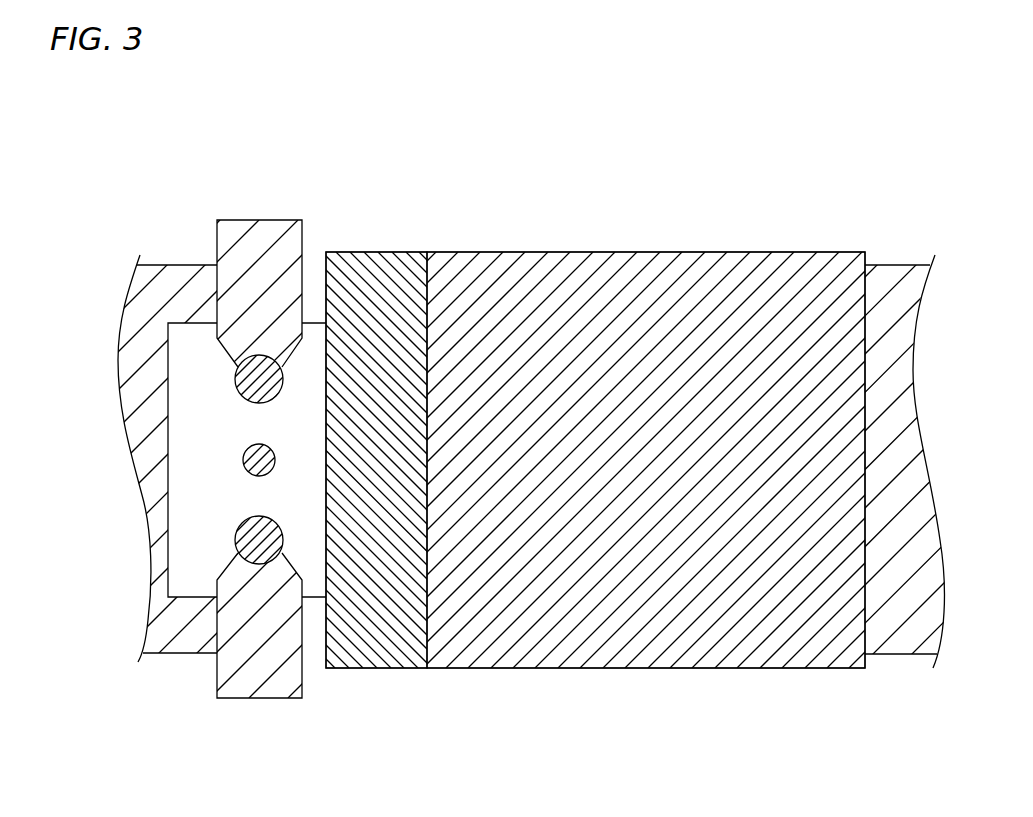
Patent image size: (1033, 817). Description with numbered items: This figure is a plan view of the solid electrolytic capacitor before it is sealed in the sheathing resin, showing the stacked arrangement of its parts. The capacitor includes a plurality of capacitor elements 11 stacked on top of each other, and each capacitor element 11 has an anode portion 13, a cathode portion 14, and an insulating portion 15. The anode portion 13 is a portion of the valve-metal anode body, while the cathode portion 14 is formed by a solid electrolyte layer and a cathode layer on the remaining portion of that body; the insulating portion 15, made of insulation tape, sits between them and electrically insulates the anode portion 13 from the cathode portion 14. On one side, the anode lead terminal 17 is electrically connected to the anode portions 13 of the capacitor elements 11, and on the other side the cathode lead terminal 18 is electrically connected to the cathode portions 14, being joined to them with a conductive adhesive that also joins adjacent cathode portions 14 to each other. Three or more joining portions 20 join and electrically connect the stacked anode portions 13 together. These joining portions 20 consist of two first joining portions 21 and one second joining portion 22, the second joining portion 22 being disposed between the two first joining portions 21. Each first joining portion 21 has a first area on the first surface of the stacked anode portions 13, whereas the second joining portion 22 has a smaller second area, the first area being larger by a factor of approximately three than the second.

The capacitor element 11 is at (613, 252).
The anode portion 13 is at (179, 340).
The cathode portion 14 is at (678, 268).
The insulating portion 15 is at (372, 265).
The anode lead terminal 17 is at (176, 290).
The cathode lead terminal 18 is at (902, 298).
The joining portion 20 is at (179, 481).
The first joining portion 21 is at (238, 383).
The second joining portion 22 is at (243, 447).